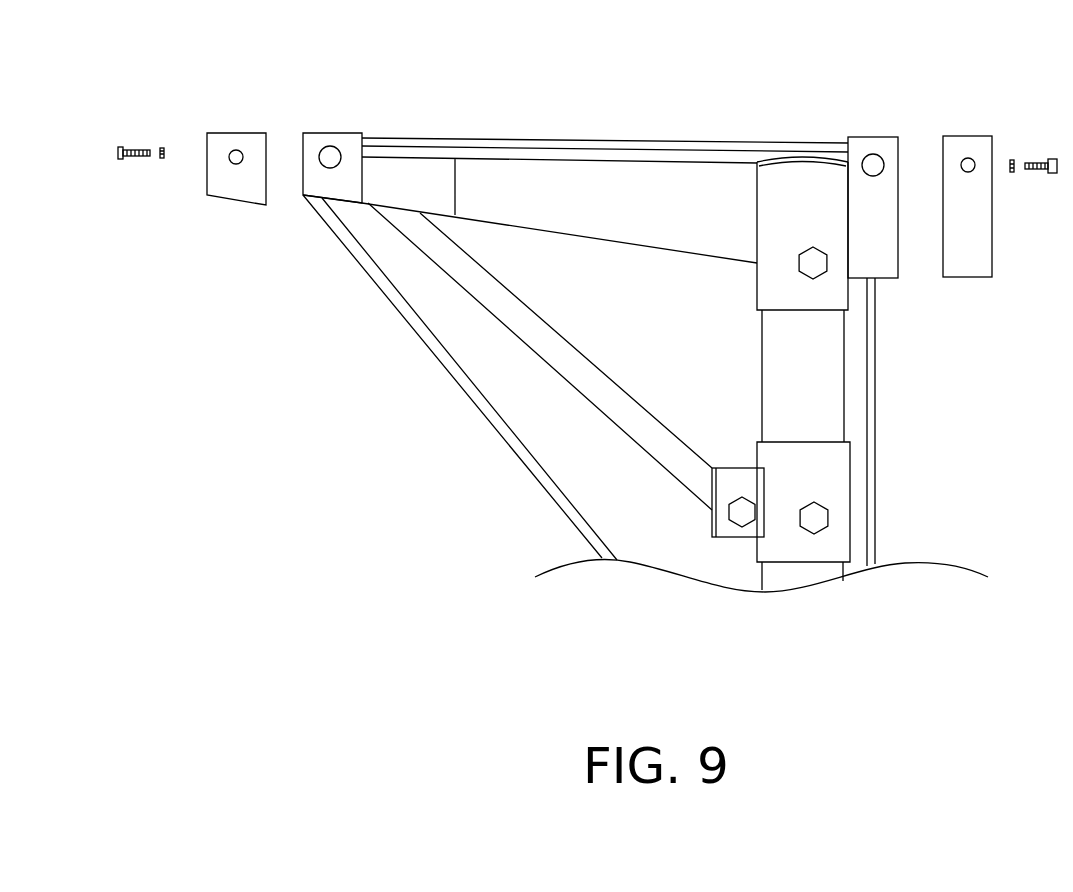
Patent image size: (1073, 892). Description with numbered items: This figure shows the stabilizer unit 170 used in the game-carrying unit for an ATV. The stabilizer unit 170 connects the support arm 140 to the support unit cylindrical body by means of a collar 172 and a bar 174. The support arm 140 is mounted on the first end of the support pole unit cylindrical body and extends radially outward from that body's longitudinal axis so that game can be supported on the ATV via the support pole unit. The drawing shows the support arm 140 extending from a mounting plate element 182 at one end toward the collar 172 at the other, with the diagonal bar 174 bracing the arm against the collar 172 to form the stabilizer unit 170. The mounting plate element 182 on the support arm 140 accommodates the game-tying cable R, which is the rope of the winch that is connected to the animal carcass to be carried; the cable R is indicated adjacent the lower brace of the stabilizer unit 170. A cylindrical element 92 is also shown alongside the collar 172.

The mounting plate element 182 is at (328, 66).
The support arm 140 is at (640, 78).
The stabilizer unit 170 is at (596, 470).
The bar 174 is at (590, 385).
The cylinder 92 is at (810, 368).
The collar 172 is at (785, 540).
The rope R is at (573, 517).